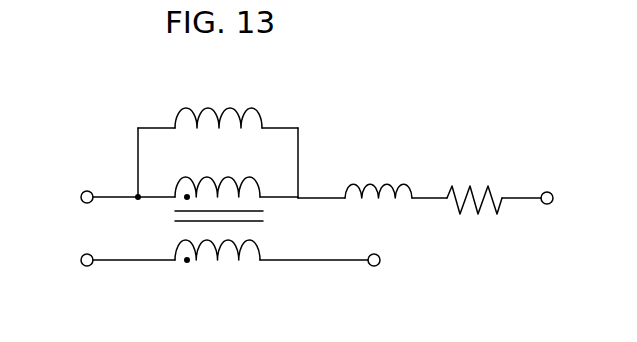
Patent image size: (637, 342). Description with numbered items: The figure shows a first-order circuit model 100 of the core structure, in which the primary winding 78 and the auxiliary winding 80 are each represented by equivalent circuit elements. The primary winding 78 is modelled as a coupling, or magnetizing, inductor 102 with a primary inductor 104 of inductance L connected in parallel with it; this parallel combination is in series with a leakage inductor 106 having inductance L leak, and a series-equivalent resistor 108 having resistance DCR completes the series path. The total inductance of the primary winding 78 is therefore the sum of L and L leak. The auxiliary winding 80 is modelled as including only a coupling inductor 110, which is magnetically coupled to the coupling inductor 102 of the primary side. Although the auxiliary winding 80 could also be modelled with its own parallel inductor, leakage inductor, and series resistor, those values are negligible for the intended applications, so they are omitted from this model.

The circuit model 100 is at (97, 87).
The primary inductor 104 is at (235, 108).
The coupling inductor 102 is at (175, 182).
The leakage inductor 106 is at (388, 192).
The series-equivalent resistor 108 is at (472, 202).
The primary winding 78 is at (360, 104).
The coupling inductor 110 is at (227, 250).
The auxiliary winding 80 is at (353, 290).